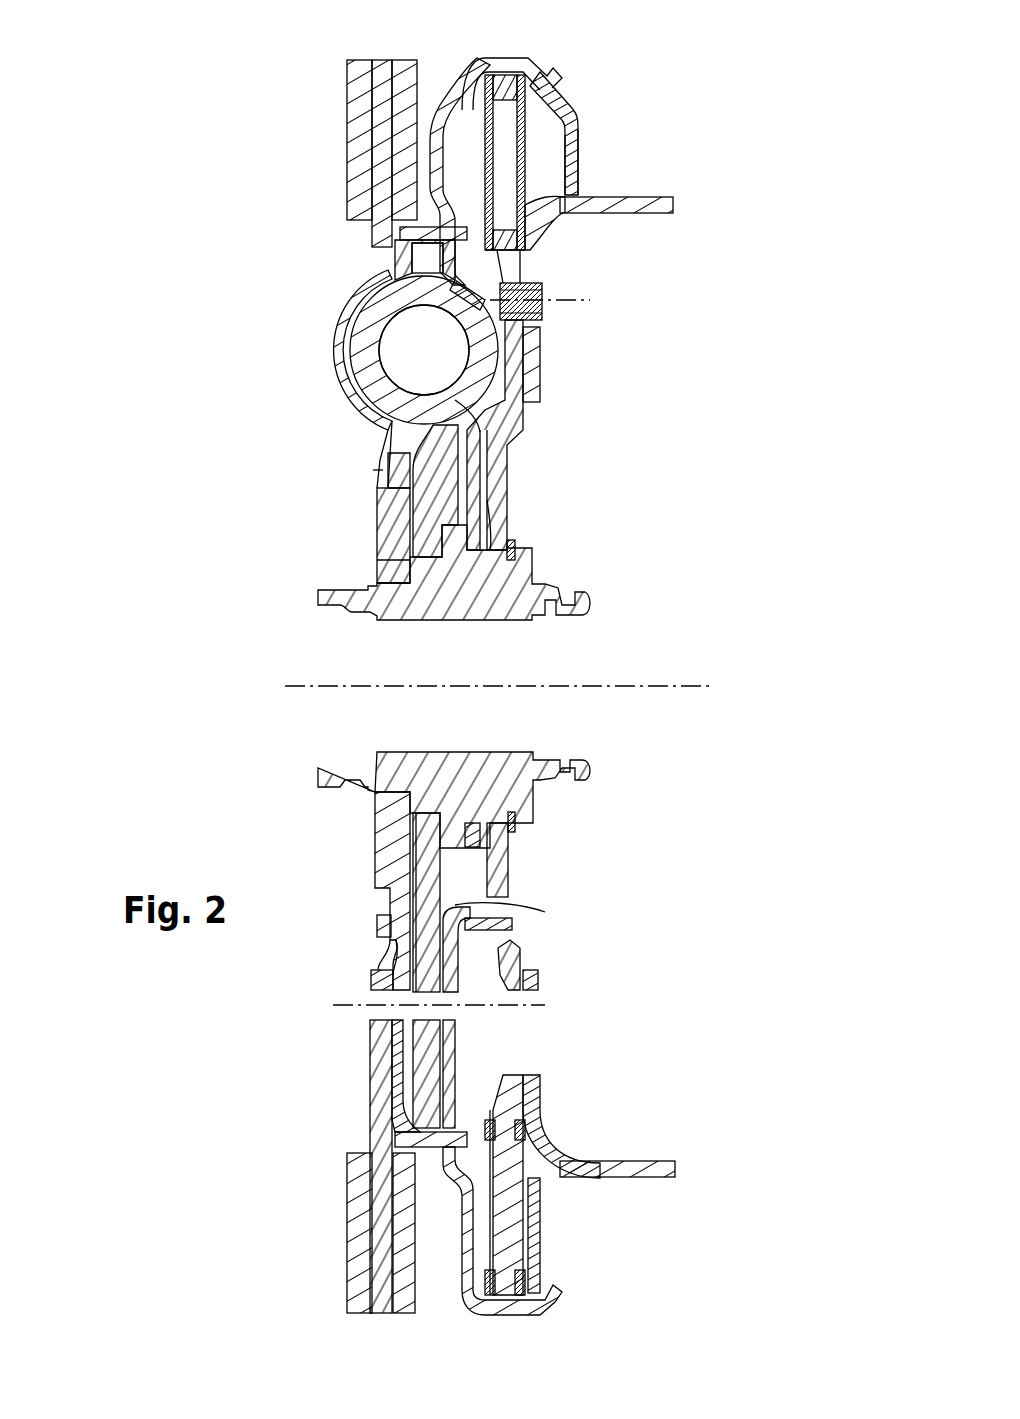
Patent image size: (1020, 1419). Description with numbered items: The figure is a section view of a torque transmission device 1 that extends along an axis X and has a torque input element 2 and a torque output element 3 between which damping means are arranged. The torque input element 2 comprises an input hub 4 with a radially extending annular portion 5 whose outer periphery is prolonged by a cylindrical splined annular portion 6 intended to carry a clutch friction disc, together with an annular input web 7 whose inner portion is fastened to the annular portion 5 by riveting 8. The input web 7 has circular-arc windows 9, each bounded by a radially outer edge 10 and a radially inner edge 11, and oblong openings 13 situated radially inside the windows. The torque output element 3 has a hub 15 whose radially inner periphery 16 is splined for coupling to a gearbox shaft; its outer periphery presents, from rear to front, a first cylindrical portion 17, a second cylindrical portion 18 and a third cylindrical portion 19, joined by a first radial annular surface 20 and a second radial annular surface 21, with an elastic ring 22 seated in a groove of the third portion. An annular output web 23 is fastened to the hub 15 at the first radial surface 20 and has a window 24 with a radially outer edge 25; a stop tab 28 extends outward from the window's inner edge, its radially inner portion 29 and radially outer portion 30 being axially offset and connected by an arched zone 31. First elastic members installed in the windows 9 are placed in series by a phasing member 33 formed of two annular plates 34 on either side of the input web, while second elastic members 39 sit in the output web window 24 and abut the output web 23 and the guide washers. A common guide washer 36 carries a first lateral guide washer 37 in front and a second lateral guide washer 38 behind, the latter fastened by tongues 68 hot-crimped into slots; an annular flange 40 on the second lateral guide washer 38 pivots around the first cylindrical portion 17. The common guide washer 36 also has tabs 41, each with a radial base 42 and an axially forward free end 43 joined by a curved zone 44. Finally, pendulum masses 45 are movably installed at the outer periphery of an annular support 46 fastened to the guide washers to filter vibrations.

The torque transmission device 1 is at (710, 97).
The torque input element 2 is at (686, 461).
The torque output element 3 is at (323, 637).
The input hub 4 is at (566, 364).
The radially extending annular portion 5 is at (534, 356).
The cylindrical splined annular portion 6 is at (640, 205).
The annular input web 7 is at (508, 452).
The riveting 8 is at (542, 305).
The windows 9 is at (516, 127).
The radially outer edge 10 is at (500, 80).
The radially inner edge 11 is at (505, 197).
The oblong circular-arc openings 13 is at (510, 897).
The hub 15 is at (454, 847).
The radially inner periphery 16 is at (437, 752).
The first cylindrical portion 17 is at (454, 599).
The second cylindrical portion 18 is at (454, 599).
The third cylindrical portion 19 is at (406, 600).
The first radial annular surface 20 is at (396, 562).
The second radial annular surface 21 is at (500, 535).
The elastic ring 22 is at (515, 542).
The annular output web 23 is at (425, 258).
The window 24 is at (369, 295).
The radially outer edge 25 is at (430, 294).
The stop tab 28 is at (384, 478).
The radially inner portion 29 is at (418, 526).
The radially outer portion 30 is at (450, 442).
The arched zone 31 is at (430, 495).
The phasing member 33 is at (591, 124).
The annular plates 34 is at (547, 120).
The common guide washer 36 is at (455, 115).
The first lateral guide washer 37 is at (573, 150).
The second lateral guide washer 38 is at (341, 356).
The second elastic members 39 is at (370, 345).
The annular flange 40 is at (396, 580).
The tabs 41 is at (543, 939).
The base 42 is at (500, 962).
The free end 43 is at (500, 926).
The curved zone 44 is at (482, 913).
The pendulum masses 45 is at (426, 72).
The annular support 46 is at (365, 78).
The tongues 68 is at (427, 232).
The axis X is at (672, 688).